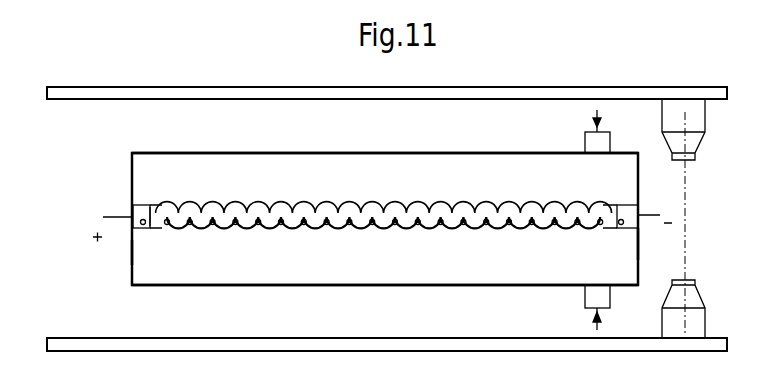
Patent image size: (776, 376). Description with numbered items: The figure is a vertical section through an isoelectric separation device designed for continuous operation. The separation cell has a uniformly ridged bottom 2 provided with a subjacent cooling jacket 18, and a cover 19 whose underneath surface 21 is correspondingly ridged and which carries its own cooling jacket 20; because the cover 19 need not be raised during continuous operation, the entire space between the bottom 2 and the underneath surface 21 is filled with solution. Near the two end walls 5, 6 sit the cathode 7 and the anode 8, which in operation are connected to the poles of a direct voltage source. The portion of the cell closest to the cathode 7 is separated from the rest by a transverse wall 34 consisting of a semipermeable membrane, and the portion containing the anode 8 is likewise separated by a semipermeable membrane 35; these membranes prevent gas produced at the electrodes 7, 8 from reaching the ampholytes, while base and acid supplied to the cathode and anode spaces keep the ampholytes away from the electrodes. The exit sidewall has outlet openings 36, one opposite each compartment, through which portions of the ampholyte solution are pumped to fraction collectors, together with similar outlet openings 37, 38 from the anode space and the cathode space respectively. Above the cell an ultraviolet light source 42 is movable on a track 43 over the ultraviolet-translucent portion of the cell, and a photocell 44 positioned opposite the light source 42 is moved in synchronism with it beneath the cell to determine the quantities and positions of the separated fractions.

The bottom 2 is at (385, 232).
The end wall 5 is at (639, 236).
The end wall 6 is at (132, 252).
The cathode 7 is at (638, 205).
The anode 8 is at (132, 208).
The cooling jacket 18 is at (478, 283).
The cover 19 is at (372, 153).
The cooling jacket 20 is at (477, 163).
The underneath surface 21 is at (378, 205).
The transverse wall 34 is at (612, 226).
The semipermeable membrane 35 is at (152, 224).
The outlet openings 36 is at (338, 230).
The outlet opening 37 is at (143, 227).
The outlet opening 38 is at (620, 226).
The ultraviolet light source 42 is at (698, 120).
The track 43 is at (661, 92).
The photocell 44 is at (700, 322).